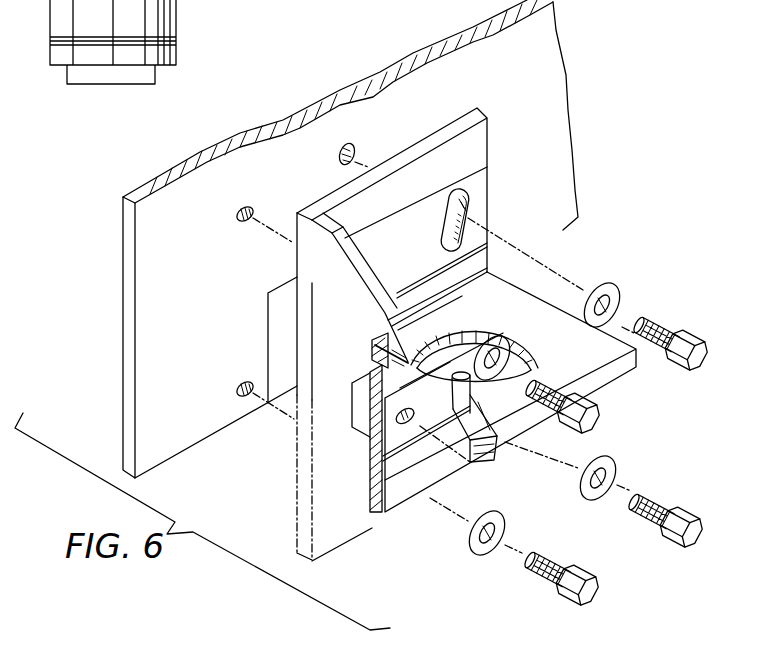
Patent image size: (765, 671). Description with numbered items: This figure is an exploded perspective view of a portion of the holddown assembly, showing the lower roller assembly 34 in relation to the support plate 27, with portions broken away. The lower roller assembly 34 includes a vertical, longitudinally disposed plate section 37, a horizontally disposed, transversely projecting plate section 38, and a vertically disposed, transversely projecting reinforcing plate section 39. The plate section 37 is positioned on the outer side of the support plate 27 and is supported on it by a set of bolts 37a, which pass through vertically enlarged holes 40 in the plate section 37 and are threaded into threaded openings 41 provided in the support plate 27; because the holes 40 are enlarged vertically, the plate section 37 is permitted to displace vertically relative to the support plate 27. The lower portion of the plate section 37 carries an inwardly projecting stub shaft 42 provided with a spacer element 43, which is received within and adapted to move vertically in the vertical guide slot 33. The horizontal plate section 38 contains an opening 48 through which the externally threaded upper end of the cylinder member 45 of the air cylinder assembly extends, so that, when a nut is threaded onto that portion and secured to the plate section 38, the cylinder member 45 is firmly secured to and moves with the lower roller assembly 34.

The cylinder member 45 is at (131, 42).
The support plate 27 is at (127, 327).
The threaded openings 41 is at (252, 202).
The vertical guide slot 33 is at (268, 326).
The plate section 37 is at (296, 267).
The vertically enlarged holes 40 is at (468, 215).
The reinforcing plate section 39 is at (362, 272).
The lower roller assembly 34 is at (590, 246).
The plate section 38 is at (605, 370).
The spacer element 43 is at (362, 424).
The stub shaft 42 is at (414, 424).
The opening 48 is at (530, 343).
The bolts 37a is at (655, 325).